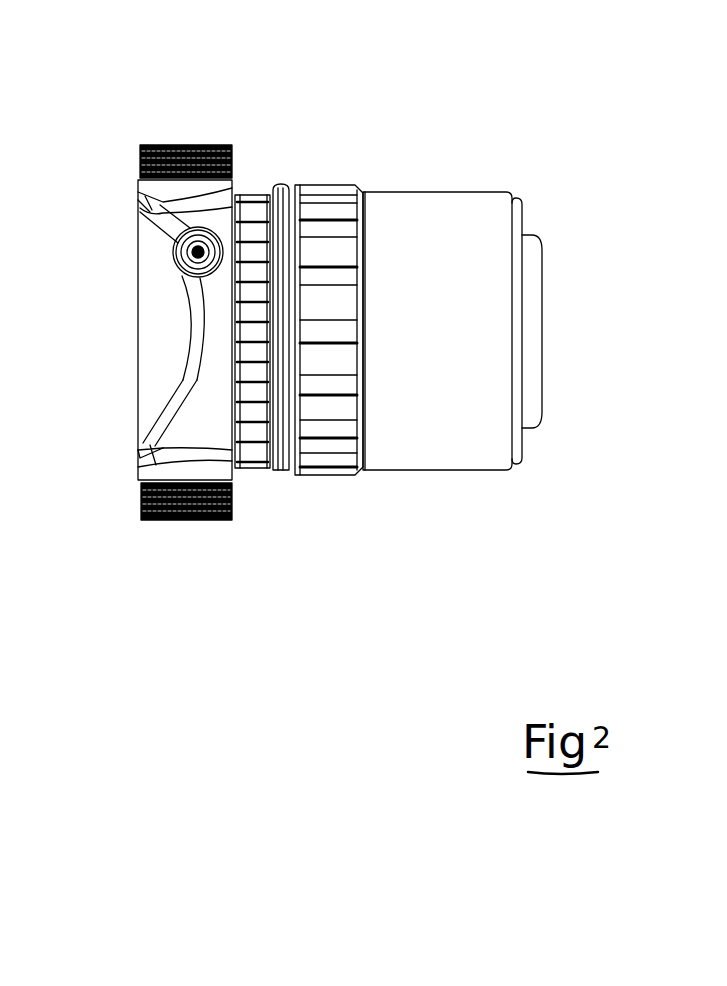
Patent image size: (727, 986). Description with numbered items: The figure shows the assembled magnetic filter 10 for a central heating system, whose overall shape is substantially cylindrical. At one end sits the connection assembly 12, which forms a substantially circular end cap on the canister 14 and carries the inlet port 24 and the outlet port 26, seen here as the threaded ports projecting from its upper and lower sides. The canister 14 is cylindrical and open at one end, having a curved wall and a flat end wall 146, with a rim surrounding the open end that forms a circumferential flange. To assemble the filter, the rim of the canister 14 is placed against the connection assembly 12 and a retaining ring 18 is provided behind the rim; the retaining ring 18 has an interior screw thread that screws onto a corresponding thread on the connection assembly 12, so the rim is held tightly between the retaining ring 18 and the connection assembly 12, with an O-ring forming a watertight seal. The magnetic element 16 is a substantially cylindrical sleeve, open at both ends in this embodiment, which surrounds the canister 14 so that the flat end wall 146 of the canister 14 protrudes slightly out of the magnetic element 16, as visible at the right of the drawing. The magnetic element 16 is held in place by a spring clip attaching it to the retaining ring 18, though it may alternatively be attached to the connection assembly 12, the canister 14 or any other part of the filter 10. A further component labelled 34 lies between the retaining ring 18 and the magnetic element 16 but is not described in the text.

The magnetic filter 10 is at (492, 105).
The connection assembly 12 is at (167, 369).
The canister 14 is at (530, 332).
The flat end wall 146 is at (537, 292).
The magnetic element 16 is at (462, 210).
The retaining ring 18 is at (255, 193).
The inlet port 24 is at (184, 523).
The outlet port 26 is at (182, 143).
The spacer washer 34 is at (285, 183).